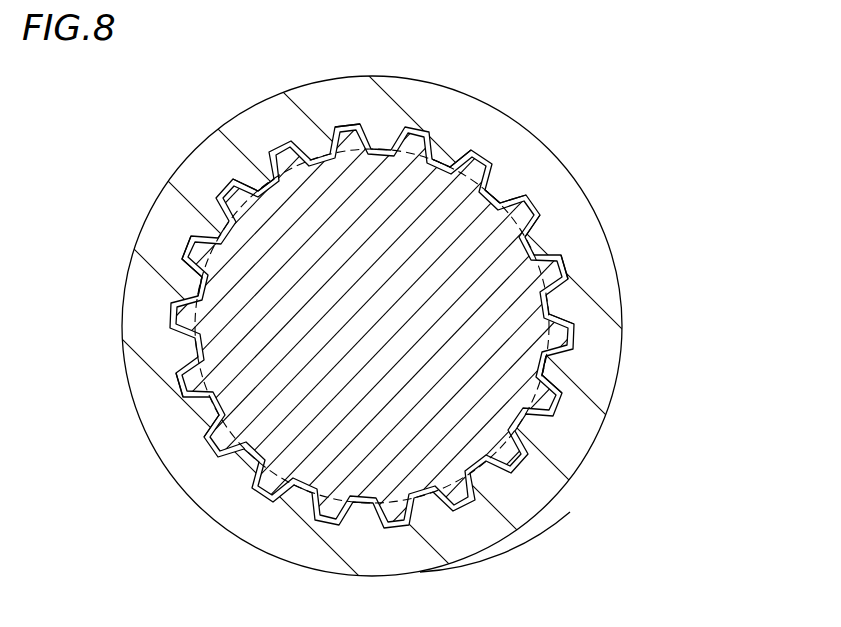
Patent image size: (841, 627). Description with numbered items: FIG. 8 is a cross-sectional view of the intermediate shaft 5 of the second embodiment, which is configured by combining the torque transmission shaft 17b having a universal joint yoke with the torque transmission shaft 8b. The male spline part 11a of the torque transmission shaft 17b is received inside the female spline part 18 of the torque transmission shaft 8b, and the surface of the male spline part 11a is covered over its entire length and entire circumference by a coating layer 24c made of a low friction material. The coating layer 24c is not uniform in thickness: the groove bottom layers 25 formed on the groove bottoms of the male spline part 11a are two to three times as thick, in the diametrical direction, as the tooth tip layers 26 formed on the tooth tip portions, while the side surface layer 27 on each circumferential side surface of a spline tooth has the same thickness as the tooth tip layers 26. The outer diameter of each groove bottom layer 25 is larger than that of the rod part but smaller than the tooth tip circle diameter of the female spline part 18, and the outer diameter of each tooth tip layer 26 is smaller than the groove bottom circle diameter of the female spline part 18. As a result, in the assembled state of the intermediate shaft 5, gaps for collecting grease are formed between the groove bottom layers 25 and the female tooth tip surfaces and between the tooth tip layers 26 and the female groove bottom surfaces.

The intermediate shaft 5 is at (522, 548).
The torque transmission shaft 8b is at (305, 107).
The male spline part 11a is at (527, 453).
The torque transmission shaft having a universal joint yoke 17b is at (289, 456).
The female spline part 18 is at (450, 157).
The coating layer 24c is at (562, 403).
The groove bottom layer 25 is at (260, 180).
The tooth tip layer 26 is at (340, 123).
The side surface layer 27 is at (543, 243).